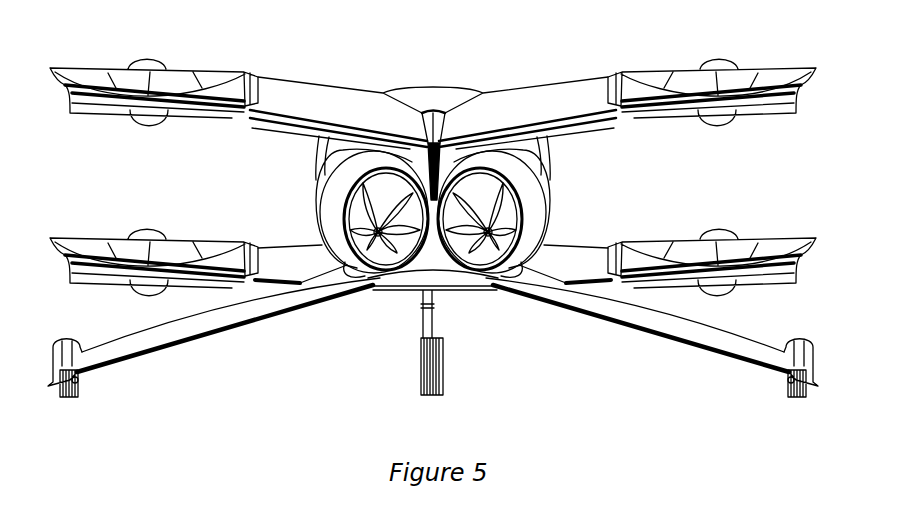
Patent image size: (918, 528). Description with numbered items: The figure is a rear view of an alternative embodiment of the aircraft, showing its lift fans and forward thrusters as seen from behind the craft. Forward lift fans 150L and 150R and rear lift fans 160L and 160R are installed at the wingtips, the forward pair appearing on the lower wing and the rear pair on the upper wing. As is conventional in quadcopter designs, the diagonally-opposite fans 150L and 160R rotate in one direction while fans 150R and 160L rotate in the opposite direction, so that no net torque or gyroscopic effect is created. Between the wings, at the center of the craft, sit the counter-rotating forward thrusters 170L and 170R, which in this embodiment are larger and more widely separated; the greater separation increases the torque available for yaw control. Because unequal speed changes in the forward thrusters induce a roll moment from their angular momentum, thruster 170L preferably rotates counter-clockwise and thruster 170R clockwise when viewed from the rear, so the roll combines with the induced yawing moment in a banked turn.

The rear lift fan 160L is at (147, 56).
The rear lift fan 160R is at (722, 51).
The counter-rotating forward thruster 170L is at (336, 208).
The counter-rotating forward thruster 170R is at (530, 209).
The forward lift fan 150L is at (150, 227).
The forward lift fan 150R is at (722, 223).